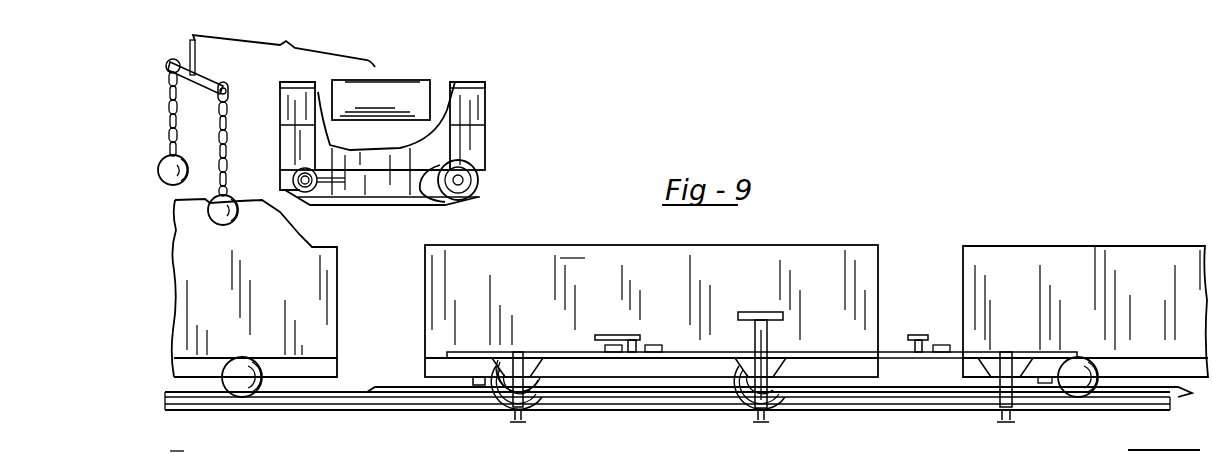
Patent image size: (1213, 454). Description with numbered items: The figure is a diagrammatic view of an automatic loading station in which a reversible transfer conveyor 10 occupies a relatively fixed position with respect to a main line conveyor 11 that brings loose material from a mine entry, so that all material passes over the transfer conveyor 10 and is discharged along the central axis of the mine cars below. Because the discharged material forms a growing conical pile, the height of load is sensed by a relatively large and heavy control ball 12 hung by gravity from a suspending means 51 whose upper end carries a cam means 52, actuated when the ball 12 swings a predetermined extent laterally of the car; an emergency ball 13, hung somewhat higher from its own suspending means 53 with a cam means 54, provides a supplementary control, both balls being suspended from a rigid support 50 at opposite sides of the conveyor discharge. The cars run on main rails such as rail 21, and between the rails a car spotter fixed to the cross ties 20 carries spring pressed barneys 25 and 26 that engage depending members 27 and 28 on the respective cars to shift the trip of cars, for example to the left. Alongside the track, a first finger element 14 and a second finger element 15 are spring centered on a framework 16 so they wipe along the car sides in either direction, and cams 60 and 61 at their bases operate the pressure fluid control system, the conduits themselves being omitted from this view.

The transfer conveyor 10 is at (391, 216).
The main line conveyor 11 is at (410, 83).
The control ball 12 is at (232, 199).
The emergency ball 13 is at (163, 182).
The first finger element 14 is at (921, 335).
The second finger element 15 is at (618, 335).
The framework 16 is at (836, 352).
The cross ties 20 is at (760, 425).
The main rail 21 is at (332, 400).
The barney 25 is at (493, 388).
The barney 26 is at (1052, 386).
The depending member 27 is at (478, 383).
The depending member 28 is at (1040, 385).
The support 50 is at (205, 78).
The suspending means 51 is at (228, 148).
The cam means 52 is at (230, 82).
The suspending means 53 is at (168, 126).
The cam means 54 is at (166, 64).
The cam 60 is at (918, 352).
The cam 61 is at (633, 352).